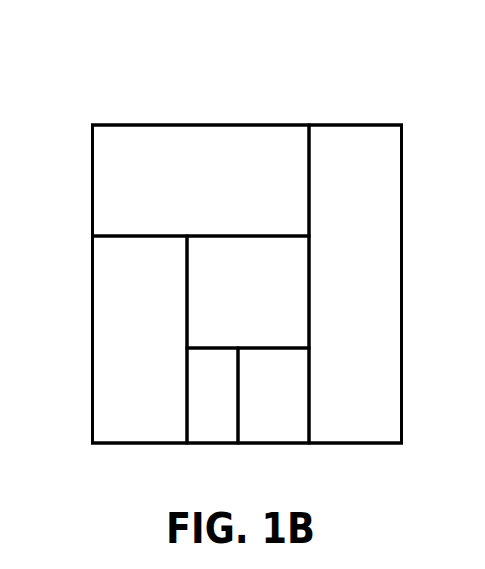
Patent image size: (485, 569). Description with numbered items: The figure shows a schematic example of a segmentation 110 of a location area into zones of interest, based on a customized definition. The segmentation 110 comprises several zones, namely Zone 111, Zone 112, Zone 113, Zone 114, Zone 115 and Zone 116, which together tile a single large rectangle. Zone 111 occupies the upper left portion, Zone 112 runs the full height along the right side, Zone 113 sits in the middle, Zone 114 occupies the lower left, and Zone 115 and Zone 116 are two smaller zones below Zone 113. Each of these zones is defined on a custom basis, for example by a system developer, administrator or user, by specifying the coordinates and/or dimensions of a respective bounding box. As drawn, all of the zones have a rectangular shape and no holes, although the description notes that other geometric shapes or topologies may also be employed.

The segmentation 110 is at (96, 80).
The zone 111 is at (133, 124).
The zone 112 is at (340, 124).
The zone 113 is at (224, 235).
The zone 114 is at (106, 446).
The zone 115 is at (199, 446).
The zone 116 is at (278, 446).